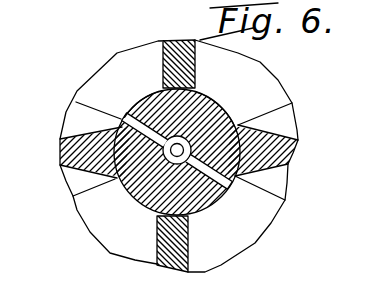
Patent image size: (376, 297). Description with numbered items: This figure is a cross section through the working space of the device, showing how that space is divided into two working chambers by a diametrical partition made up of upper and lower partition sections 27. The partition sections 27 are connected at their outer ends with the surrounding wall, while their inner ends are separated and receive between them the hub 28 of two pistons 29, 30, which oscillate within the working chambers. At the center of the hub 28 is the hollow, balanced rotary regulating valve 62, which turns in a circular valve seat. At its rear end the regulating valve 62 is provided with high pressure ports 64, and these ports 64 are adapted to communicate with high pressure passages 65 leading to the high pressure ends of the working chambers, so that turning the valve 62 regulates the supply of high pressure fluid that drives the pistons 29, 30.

The partition sections 27 is at (173, 41).
The hub 28 is at (205, 92).
The piston 29 is at (60, 152).
The piston 30 is at (292, 152).
The rotary regulating valve 62 is at (143, 212).
The high pressure ports 64 is at (166, 89).
The high pressure passages 65 is at (124, 117).